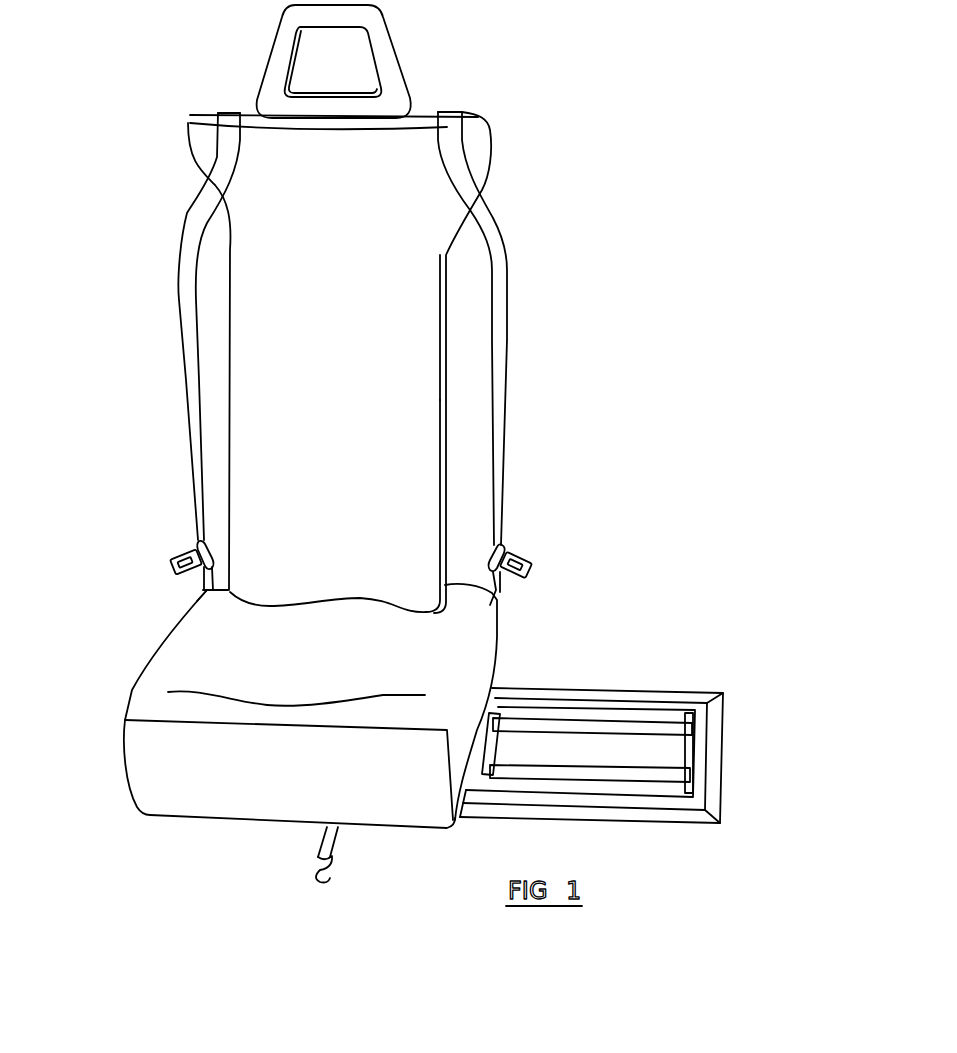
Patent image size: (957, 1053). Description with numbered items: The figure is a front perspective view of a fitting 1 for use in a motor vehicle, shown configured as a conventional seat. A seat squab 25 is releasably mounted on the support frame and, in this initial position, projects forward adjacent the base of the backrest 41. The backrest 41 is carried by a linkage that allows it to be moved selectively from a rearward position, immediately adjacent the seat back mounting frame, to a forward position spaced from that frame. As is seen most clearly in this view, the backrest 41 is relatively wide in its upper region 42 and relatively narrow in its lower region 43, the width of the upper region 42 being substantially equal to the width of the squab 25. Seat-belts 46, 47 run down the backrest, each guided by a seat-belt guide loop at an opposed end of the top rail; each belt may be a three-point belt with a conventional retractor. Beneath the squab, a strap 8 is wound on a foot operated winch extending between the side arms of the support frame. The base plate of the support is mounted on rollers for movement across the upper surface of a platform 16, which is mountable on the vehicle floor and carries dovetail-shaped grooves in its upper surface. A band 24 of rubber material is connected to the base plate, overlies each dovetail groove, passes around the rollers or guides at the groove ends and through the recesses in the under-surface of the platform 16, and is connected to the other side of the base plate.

The fitting 1 is at (173, 417).
The strap 8 is at (330, 838).
The platform 16 is at (607, 787).
The band 24 is at (580, 713).
The seat squab 25 is at (235, 635).
The backrest 41 is at (357, 318).
The upper region 42 is at (415, 190).
The lower region 43 is at (365, 468).
The seat-belt 46 is at (498, 423).
The seat-belt 47 is at (190, 323).